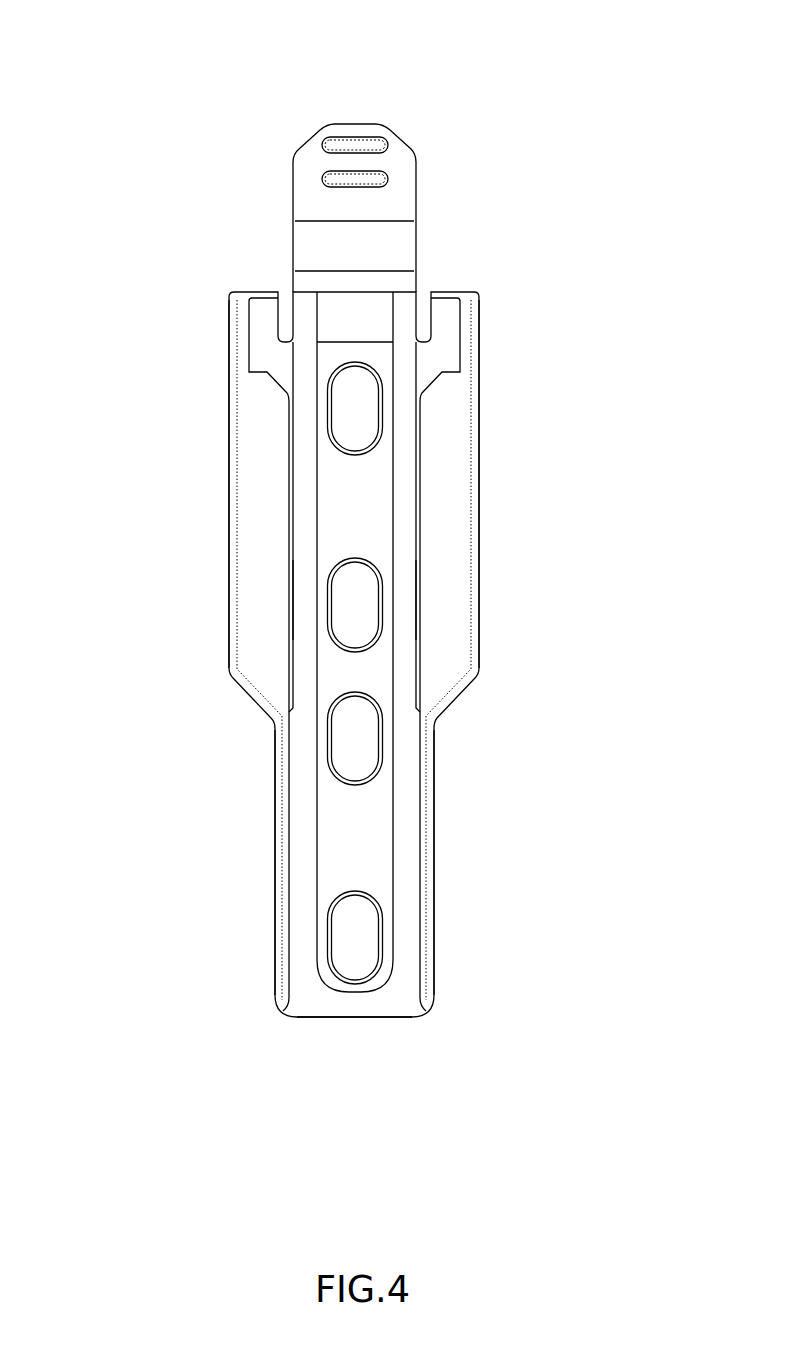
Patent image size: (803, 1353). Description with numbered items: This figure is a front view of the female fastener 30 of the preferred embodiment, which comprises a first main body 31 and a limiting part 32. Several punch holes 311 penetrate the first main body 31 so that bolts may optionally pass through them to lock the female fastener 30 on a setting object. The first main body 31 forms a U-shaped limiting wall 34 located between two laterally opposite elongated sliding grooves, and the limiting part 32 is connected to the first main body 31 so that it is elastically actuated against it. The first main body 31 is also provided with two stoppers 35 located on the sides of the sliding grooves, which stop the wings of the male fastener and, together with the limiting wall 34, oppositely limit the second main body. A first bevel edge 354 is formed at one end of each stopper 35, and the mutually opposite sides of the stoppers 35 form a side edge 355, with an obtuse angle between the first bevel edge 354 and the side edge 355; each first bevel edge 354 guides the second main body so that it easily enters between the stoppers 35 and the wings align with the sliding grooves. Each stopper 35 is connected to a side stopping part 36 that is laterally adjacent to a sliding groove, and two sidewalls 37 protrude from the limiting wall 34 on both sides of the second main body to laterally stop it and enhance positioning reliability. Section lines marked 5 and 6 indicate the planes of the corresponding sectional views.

The female fastener 30 is at (547, 245).
The first main body 31 is at (312, 1017).
The limiting part 32 is at (348, 285).
The limiting wall 34 is at (305, 668).
The punch holes 311 is at (355, 760).
The stoppers 35 is at (255, 600).
The first bevel edge 354 is at (265, 385).
The side edge 355 is at (290, 617).
The side stopping part 36 is at (228, 392).
The sidewalls 37 is at (273, 933).
The section line 5- 5 is at (355, 117).
The section line 6- 6 is at (223, 496).